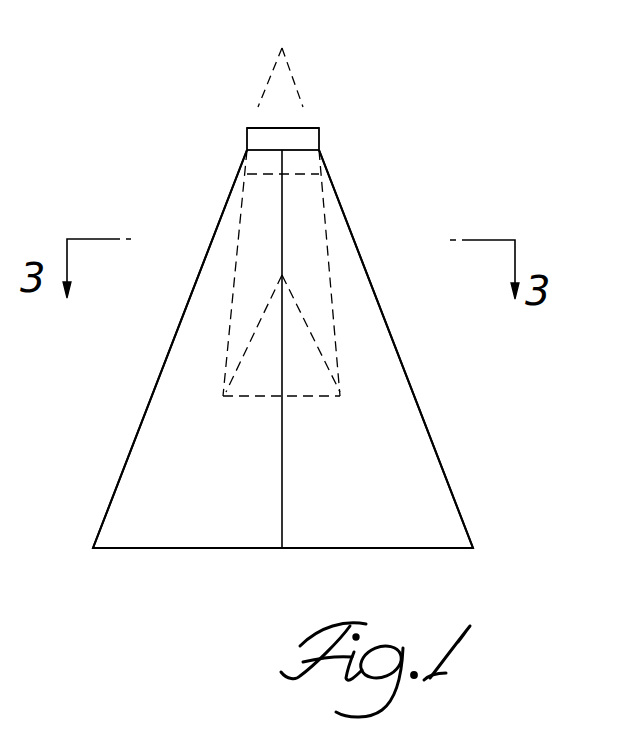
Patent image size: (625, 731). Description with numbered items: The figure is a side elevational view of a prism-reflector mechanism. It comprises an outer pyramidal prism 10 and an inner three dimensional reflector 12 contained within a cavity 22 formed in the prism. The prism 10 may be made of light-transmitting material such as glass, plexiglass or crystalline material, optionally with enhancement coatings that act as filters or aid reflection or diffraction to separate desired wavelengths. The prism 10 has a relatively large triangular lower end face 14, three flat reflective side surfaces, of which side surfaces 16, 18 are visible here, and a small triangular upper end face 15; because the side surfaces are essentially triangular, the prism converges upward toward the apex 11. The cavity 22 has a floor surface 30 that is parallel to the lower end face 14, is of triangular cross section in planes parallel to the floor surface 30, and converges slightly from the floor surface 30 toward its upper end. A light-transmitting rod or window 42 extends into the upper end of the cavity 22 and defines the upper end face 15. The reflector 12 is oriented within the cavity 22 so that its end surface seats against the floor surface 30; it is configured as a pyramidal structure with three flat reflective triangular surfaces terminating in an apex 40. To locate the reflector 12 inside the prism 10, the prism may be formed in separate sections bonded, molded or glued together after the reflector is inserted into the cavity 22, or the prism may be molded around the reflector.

The outer pyramidal prism 10 is at (428, 418).
The apex 11 is at (282, 48).
The inner three dimensional reflector 12 is at (308, 333).
The lower end face 14 is at (317, 548).
The upper end face 15 is at (257, 128).
The side surface 16 is at (430, 483).
The side surface 18 is at (138, 478).
The cavity 22 is at (323, 216).
The floor surface 30 is at (255, 392).
The apex 40 is at (282, 271).
The light-transmitting rod or window 42 is at (310, 137).